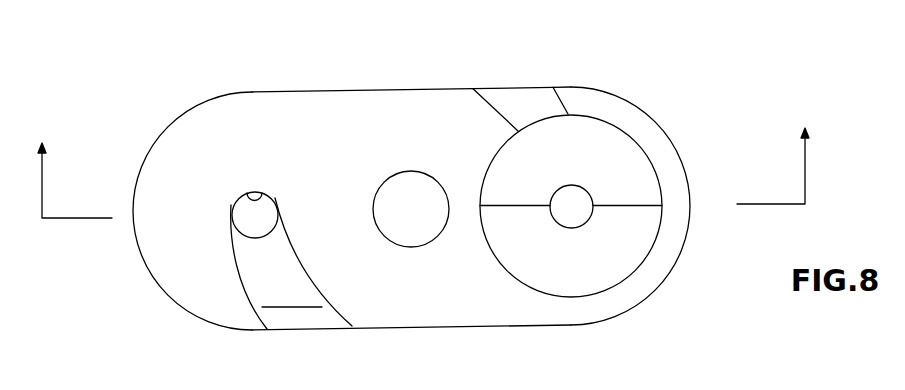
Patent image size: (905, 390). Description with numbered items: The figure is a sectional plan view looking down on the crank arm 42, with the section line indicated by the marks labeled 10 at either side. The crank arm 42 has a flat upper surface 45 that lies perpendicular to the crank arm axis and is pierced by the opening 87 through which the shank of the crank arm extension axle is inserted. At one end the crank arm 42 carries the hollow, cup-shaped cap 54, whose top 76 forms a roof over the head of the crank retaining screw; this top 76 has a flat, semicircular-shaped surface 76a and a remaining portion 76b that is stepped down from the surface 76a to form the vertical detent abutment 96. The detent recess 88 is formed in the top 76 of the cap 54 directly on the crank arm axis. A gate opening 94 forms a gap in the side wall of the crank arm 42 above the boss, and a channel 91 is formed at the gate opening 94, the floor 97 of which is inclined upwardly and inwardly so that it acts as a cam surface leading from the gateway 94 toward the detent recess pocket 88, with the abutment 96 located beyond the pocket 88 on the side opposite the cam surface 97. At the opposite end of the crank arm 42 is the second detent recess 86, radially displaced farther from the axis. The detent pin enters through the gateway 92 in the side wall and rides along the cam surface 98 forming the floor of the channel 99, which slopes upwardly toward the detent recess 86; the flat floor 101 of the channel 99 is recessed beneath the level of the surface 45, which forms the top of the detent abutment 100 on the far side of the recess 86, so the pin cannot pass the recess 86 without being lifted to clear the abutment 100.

The crank arm 42 is at (441, 167).
The detent abutment 100 is at (247, 193).
The opening 87 is at (398, 185).
The channel 91 is at (497, 105).
The detent pin receiving gate opening 94 is at (515, 88).
The channel floor 97 is at (537, 107).
The detent recess 88 is at (565, 200).
The top 76 is at (642, 227).
The flat semicircular-shaped surface 76a is at (577, 280).
The remaining portion 76b is at (607, 165).
The cap 54 is at (638, 190).
The vertical abutment 96 is at (574, 224).
The detent recess 86 is at (243, 217).
The detent pin receiving gate opening 92 is at (307, 330).
The cam surface 98 is at (280, 318).
The floor 101 is at (267, 296).
The channel 99 is at (272, 275).
The upper surface 45 is at (457, 315).
The section line 10 is at (424, 176).